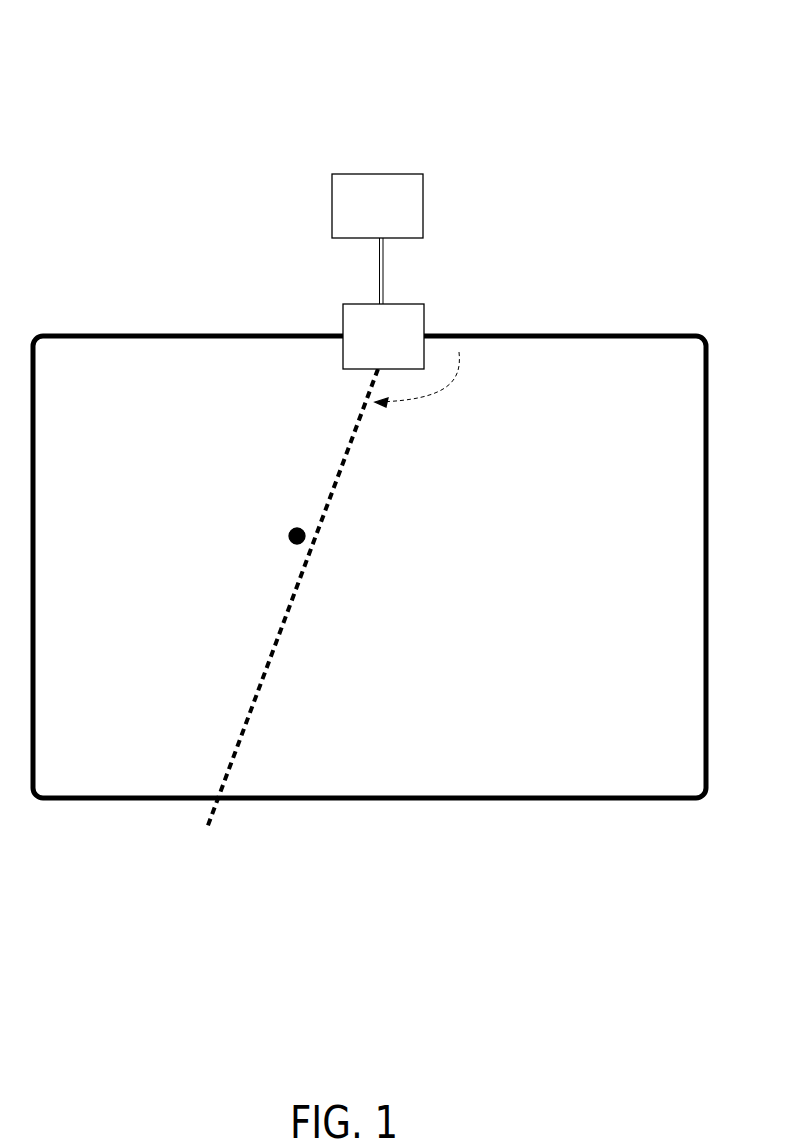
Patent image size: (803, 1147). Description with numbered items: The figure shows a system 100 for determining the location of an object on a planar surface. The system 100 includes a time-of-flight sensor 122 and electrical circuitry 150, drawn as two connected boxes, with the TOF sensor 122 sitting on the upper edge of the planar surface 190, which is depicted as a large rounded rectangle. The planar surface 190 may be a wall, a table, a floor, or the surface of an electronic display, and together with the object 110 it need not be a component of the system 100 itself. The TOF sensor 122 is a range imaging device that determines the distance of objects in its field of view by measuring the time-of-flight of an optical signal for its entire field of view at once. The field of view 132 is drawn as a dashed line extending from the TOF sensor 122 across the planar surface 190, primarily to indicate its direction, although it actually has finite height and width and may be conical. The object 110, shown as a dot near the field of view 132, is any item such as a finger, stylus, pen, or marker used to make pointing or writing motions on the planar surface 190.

The system 100 is at (655, 70).
The object 110 is at (291, 527).
The time-of-flight (TOF) sensor 122 is at (383, 336).
The field of view 132 is at (239, 752).
The electrical circuitry 150 is at (377, 239).
The planar surface 190 is at (592, 804).